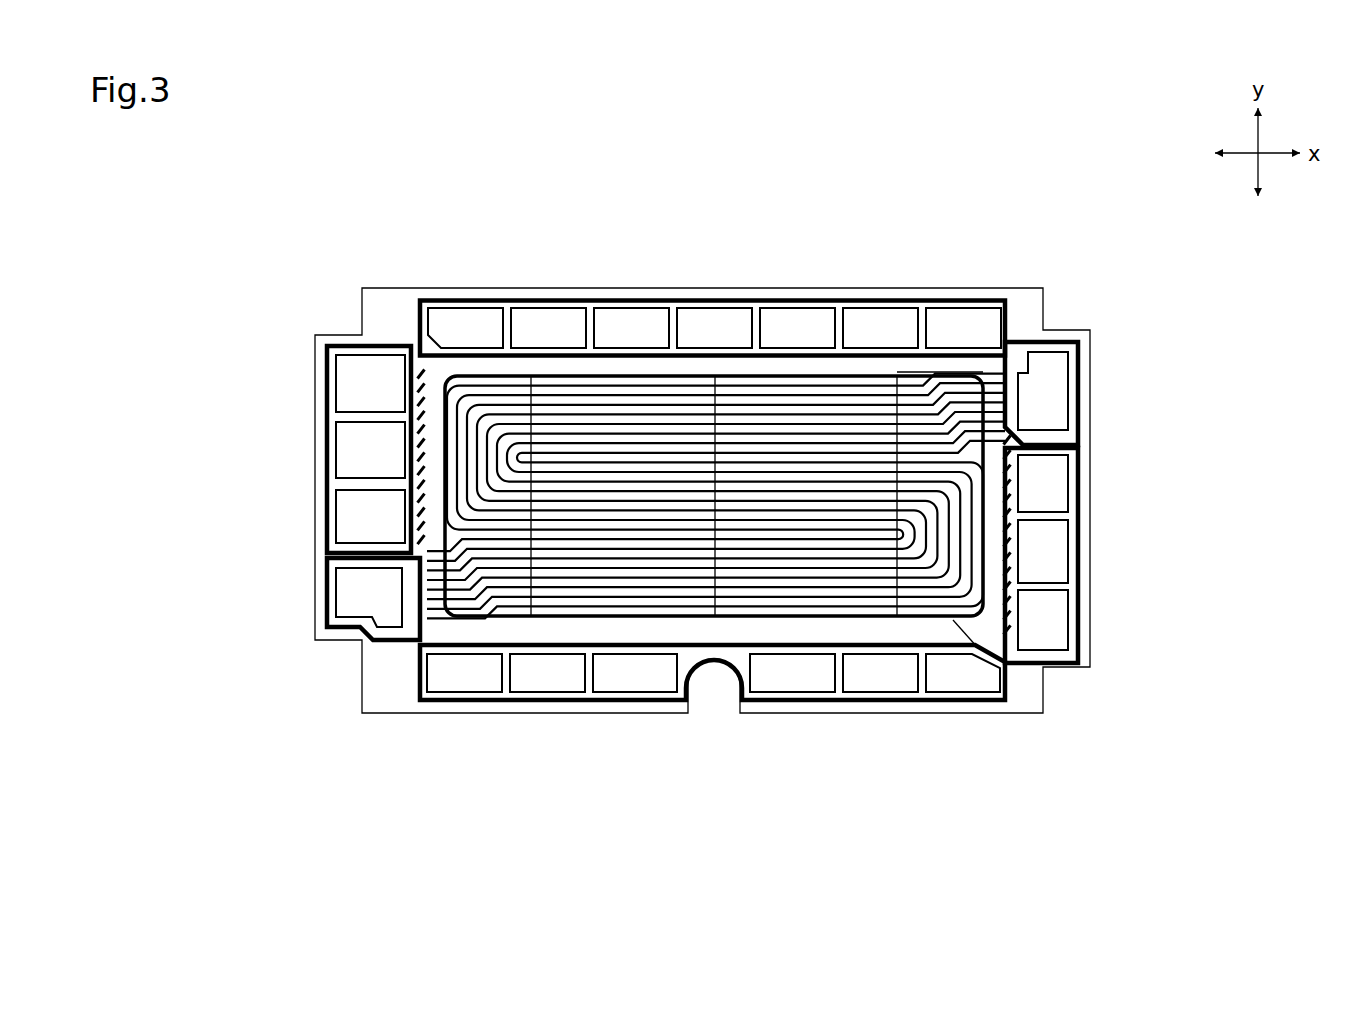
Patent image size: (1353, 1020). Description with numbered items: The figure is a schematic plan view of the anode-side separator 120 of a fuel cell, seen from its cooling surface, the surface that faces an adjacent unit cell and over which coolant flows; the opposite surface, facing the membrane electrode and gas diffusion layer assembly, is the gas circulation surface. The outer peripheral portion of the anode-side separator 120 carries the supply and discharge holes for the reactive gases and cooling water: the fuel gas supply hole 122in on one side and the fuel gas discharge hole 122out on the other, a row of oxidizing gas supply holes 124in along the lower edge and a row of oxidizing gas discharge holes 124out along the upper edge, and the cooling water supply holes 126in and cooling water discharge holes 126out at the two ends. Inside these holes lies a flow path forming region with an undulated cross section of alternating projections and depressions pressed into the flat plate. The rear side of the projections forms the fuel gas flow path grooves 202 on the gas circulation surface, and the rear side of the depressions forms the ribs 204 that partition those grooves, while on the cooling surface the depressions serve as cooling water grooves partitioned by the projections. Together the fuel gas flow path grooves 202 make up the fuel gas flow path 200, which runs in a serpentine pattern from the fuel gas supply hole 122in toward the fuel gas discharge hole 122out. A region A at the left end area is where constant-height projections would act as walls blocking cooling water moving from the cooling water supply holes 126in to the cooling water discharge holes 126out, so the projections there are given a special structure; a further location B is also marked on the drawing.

The anode-side separator 120 is at (404, 122).
The fuel gas flow path 200 is at (705, 583).
The fuel gas flow path grooves 202 is at (778, 385).
The ribs 204 is at (850, 393).
The oxidizing gas discharge holes 124out is at (985, 327).
The oxidizing gas supply holes 124in is at (985, 683).
The fuel gas supply hole 122in is at (1060, 393).
The fuel gas discharge hole 122out is at (353, 590).
The cooling water supply holes 126in is at (1050, 622).
The cooling water discharge holes 126out is at (353, 527).
The region A is at (990, 652).
The section line B is at (327, 551).